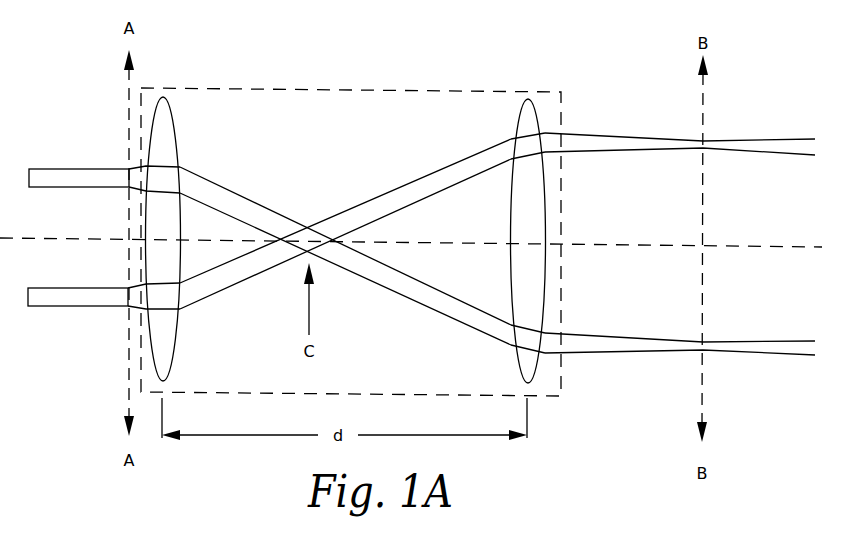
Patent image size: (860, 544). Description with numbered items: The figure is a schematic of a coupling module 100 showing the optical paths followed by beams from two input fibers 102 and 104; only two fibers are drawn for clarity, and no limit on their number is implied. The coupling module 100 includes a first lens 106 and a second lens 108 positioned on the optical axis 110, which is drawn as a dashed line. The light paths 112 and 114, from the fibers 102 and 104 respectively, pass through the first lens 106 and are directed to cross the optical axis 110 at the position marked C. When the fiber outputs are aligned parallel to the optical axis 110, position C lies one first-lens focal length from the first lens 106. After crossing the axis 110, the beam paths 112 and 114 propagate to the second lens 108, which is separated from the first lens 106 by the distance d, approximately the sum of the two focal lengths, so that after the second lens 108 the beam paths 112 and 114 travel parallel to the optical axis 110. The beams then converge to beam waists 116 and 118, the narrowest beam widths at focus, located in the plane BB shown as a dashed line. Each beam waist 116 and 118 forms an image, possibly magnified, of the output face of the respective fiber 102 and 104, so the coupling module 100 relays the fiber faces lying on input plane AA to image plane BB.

The coupling module 100 is at (323, 88).
The input fiber 102 is at (65, 175).
The input fiber 104 is at (58, 298).
The first lens 106 is at (168, 100).
The second lens 108 is at (525, 99).
The optical axis 110 is at (763, 247).
The light path 112 is at (247, 208).
The light path 114 is at (257, 267).
The beam waist 116 is at (698, 347).
The beam waist 118 is at (700, 145).